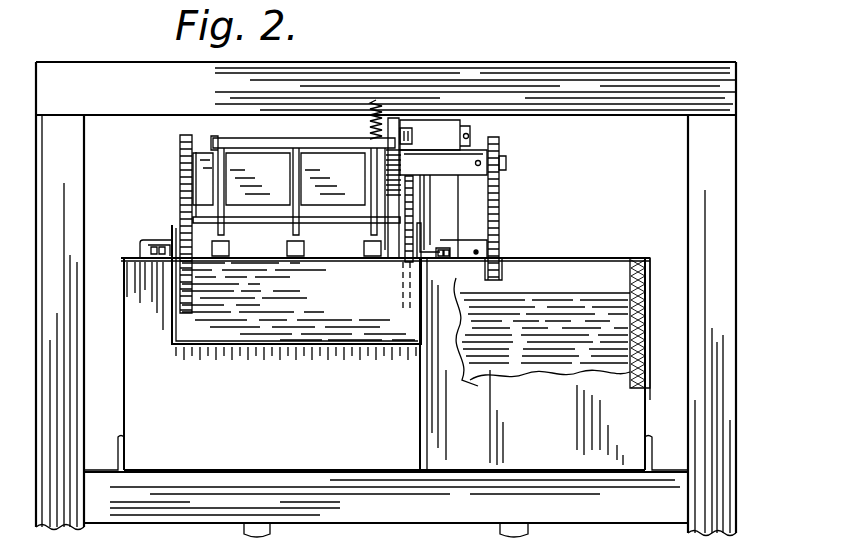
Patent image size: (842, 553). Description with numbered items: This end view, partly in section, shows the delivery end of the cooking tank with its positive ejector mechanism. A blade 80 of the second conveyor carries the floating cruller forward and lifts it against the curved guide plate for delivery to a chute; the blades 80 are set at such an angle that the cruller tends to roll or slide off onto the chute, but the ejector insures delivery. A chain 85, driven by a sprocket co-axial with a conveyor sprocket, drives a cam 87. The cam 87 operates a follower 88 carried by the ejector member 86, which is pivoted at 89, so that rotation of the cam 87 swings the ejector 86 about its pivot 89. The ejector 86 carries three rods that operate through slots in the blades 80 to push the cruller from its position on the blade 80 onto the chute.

The blade 80 is at (247, 173).
The chain 85 is at (497, 228).
The ejector 86 is at (269, 140).
The cam 87 is at (402, 140).
The follower 88 is at (394, 152).
The pivot 89 is at (412, 140).